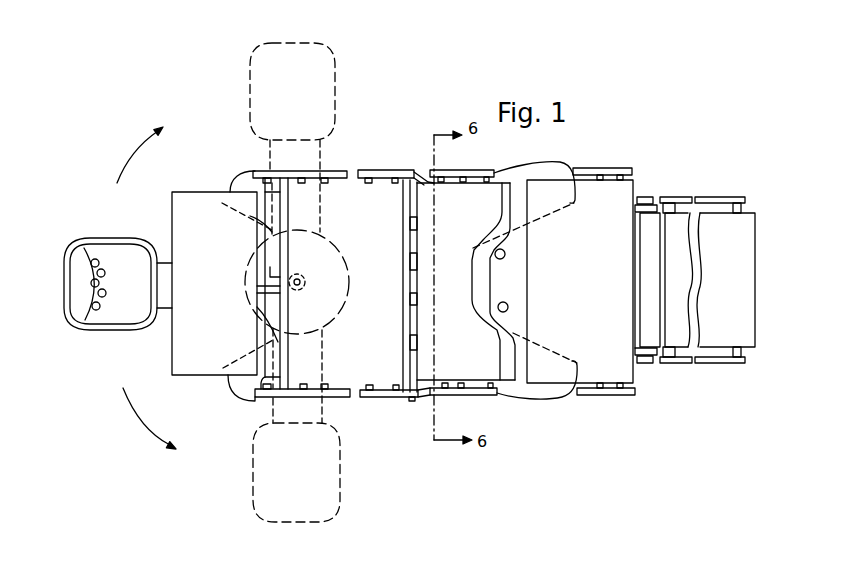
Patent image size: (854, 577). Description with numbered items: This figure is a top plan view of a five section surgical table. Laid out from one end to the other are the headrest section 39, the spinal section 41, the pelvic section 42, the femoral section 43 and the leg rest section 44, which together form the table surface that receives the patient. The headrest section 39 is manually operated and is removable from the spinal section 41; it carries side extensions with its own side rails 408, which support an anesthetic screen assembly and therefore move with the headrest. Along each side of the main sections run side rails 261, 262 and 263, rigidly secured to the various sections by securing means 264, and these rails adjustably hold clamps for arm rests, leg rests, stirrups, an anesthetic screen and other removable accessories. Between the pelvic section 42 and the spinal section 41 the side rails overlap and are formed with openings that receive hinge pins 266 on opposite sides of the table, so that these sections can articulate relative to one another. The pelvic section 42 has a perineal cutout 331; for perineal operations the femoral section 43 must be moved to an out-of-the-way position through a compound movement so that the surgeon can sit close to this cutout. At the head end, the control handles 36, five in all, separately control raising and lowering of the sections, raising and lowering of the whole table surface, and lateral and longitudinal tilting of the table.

The control handles 36 is at (96, 310).
The headrest section 39 is at (187, 343).
The spinal section 41 is at (318, 283).
The pelvic section 42 is at (459, 286).
The femoral section 43 is at (580, 281).
The leg rest section 44 is at (695, 280).
The side rail 261 is at (337, 171).
The side rail 262 is at (385, 170).
The side rail 263 is at (458, 170).
The securing means 264 is at (325, 184).
The hinge pins 266 is at (419, 170).
The perineal cutout 331 is at (472, 284).
The side rails 408 is at (266, 170).